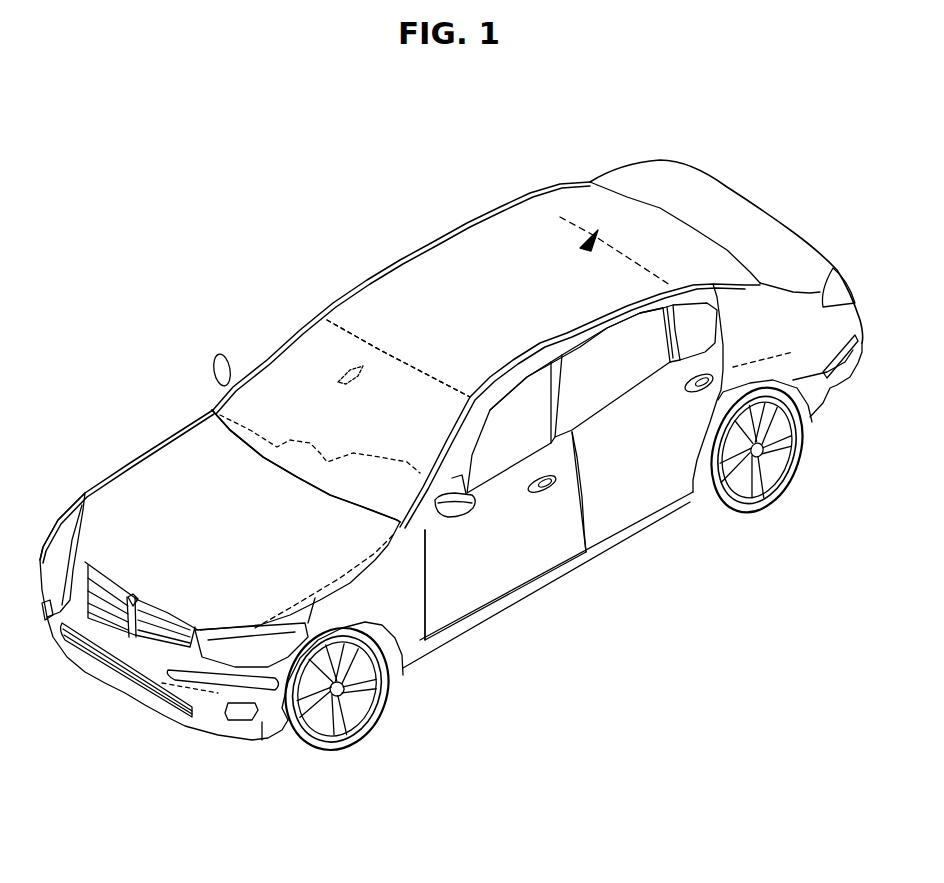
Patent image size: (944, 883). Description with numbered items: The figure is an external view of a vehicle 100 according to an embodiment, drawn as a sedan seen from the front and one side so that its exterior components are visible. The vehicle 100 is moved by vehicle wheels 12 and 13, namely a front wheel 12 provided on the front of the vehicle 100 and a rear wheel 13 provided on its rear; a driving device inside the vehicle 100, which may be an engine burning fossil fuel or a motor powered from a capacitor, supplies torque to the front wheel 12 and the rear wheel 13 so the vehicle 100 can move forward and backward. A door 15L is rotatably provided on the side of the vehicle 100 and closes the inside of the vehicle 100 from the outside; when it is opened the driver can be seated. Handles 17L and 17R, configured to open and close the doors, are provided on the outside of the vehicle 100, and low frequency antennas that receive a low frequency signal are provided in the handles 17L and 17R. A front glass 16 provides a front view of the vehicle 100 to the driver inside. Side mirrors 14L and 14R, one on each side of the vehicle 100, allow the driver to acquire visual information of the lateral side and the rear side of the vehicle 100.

The vehicle 100 is at (248, 237).
The front wheel 12 is at (372, 692).
The rear wheel 13 is at (780, 458).
The right side mirror 14L is at (470, 513).
The left side mirror 14R is at (220, 371).
The door 15L is at (522, 545).
The front glass 16 is at (392, 380).
The handle 17L is at (557, 487).
The handle 17R is at (347, 367).